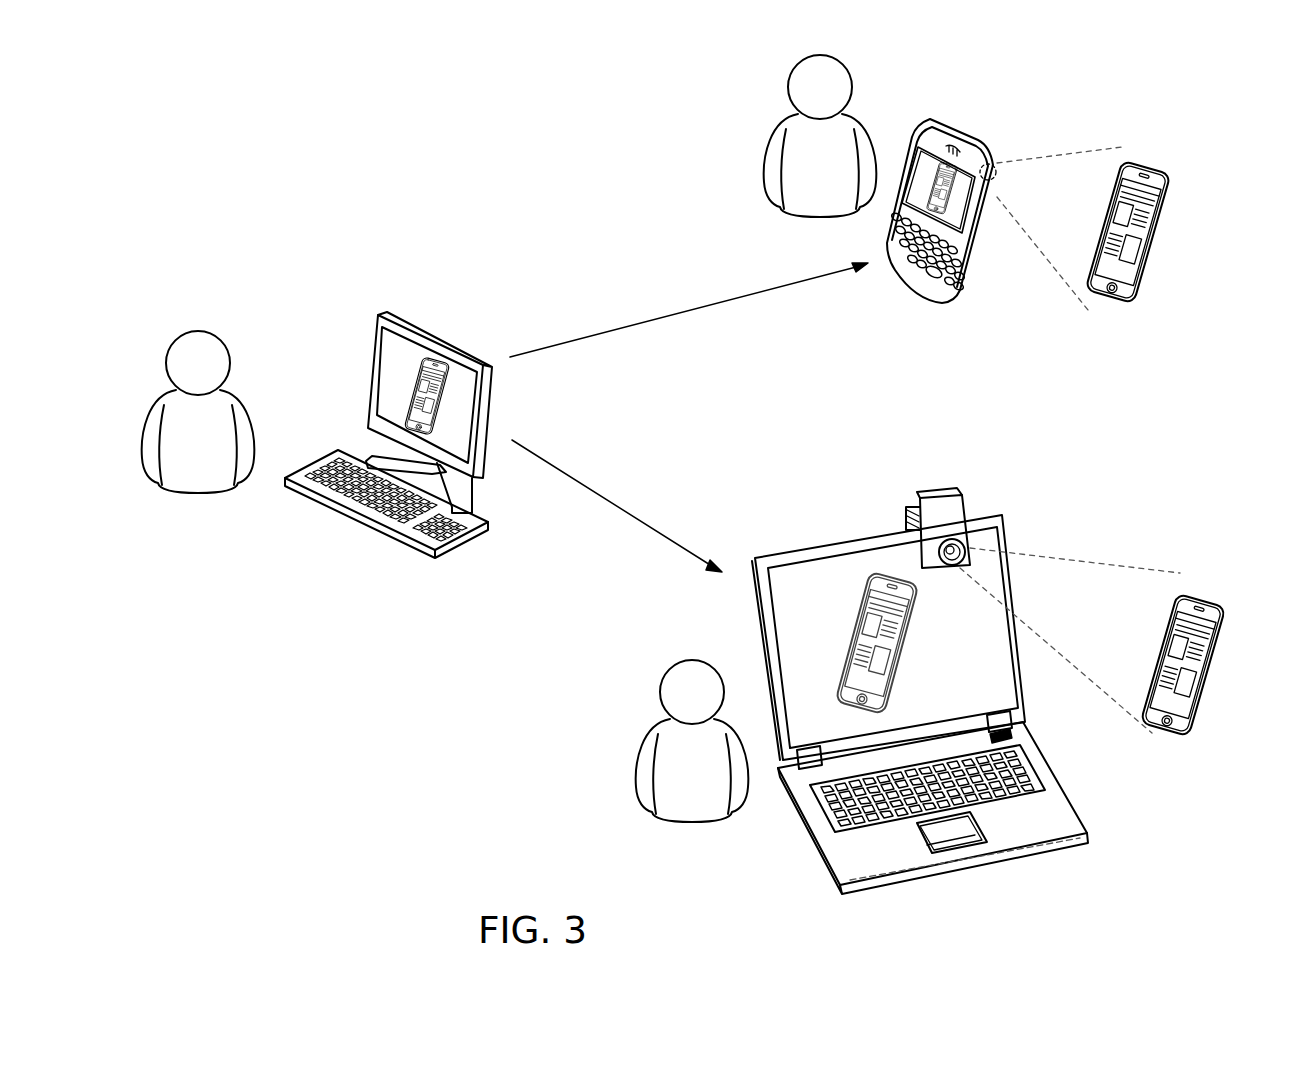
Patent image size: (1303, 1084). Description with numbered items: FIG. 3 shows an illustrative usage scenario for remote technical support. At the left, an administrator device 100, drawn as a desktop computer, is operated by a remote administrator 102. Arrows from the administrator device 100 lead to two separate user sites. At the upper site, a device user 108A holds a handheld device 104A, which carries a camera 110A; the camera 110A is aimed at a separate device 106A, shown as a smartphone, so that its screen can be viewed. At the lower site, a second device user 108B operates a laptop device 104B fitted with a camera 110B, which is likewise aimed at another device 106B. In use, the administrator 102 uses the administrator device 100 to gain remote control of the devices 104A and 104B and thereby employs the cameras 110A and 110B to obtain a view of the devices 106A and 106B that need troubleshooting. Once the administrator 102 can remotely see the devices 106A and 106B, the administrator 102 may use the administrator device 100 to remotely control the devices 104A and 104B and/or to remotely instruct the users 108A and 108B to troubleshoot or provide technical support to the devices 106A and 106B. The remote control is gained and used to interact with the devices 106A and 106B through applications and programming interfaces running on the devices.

The administrator device 100 is at (408, 315).
The administrator 102 is at (183, 332).
The device 104A is at (963, 138).
The device 104B is at (818, 545).
The device 106A is at (1153, 168).
The device 106B is at (1205, 597).
The user 108A is at (788, 82).
The user 108B is at (657, 728).
The camera 110A is at (996, 175).
The camera 110B is at (928, 491).